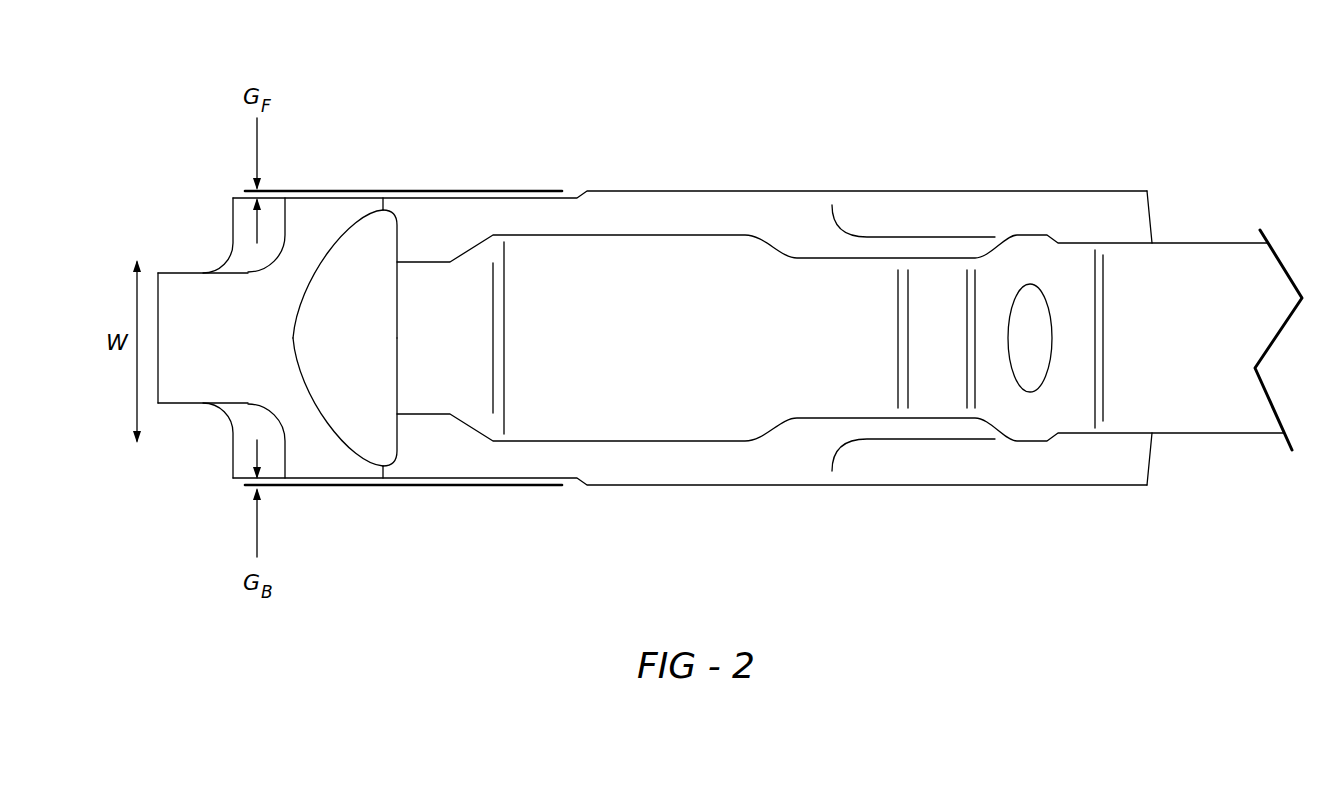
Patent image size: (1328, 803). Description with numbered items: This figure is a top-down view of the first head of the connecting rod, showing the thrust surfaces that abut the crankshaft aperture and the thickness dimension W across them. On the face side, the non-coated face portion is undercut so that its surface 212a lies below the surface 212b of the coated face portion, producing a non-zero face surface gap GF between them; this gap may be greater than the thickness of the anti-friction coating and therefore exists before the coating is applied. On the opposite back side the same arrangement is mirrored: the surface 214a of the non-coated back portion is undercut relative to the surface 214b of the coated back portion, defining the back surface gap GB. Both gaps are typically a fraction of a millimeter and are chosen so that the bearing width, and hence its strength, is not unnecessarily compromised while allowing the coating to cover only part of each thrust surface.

The surface of the non-coated face portion 212a is at (237, 193).
The surface of the coated face portion 212b is at (668, 173).
The surface of the non-coated back portion 214a is at (237, 483).
The surface of the coated back portion 214b is at (658, 497).